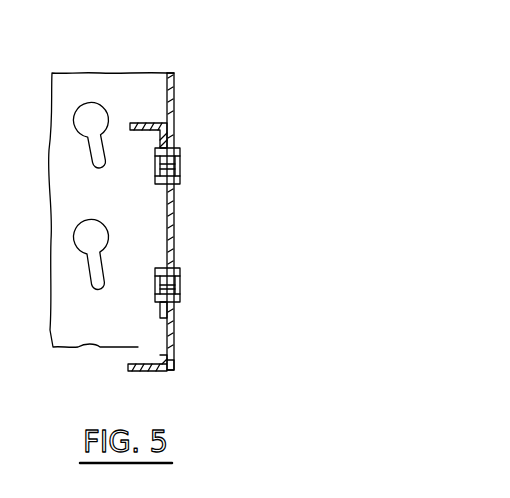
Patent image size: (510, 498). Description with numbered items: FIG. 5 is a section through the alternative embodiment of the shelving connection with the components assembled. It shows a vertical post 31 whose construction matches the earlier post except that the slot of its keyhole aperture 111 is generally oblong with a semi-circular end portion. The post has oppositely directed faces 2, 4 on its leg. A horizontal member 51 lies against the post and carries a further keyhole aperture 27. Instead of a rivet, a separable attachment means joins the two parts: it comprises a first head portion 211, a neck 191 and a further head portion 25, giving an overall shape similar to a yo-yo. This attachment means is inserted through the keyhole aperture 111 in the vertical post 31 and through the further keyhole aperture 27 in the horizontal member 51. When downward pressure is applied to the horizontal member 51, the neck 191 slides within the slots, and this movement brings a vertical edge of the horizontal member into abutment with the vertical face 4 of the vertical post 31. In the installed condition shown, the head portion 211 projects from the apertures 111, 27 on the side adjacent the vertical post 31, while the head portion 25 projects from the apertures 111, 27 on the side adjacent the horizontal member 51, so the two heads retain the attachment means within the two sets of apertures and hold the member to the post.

The vertical post 31 is at (133, 93).
The face 2 is at (174, 85).
The face 4 is at (168, 80).
The keyhole aperture 111 is at (176, 123).
The keyhole aperture 27 is at (166, 196).
The first head portion 211 is at (180, 286).
The neck 191 is at (156, 300).
The further head portion 25 is at (160, 312).
The horizontal member 51 is at (174, 361).